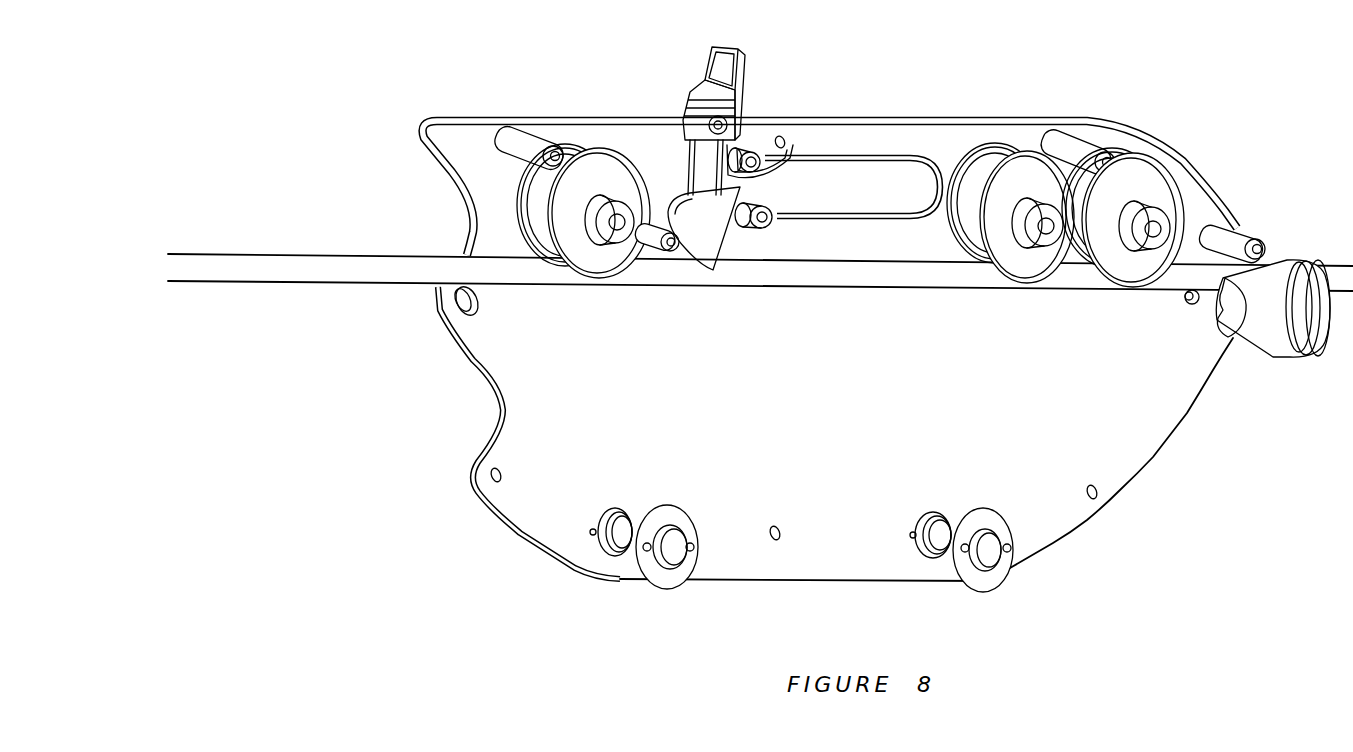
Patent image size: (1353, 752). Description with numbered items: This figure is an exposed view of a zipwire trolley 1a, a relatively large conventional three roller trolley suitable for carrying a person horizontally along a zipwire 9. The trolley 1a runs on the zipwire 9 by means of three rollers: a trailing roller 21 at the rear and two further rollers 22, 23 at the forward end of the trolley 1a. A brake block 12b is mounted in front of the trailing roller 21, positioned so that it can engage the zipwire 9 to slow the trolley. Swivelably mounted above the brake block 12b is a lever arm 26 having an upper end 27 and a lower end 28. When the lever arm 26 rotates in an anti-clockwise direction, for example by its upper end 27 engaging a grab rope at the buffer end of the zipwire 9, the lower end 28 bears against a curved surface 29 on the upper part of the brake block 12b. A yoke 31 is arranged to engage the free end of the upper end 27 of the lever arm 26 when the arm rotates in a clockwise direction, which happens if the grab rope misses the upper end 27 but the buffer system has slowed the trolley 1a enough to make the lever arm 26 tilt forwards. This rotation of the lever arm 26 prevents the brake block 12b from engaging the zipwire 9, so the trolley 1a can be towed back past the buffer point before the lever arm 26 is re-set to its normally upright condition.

The zipwire trolley 1a is at (1036, 90).
The zipwire 9 is at (376, 283).
The brake block 12b is at (737, 192).
The trailing roller 21 is at (630, 268).
The roller 22 is at (1040, 285).
The roller 23 is at (1133, 283).
The lever arm 26 is at (740, 112).
The upper end 27 is at (745, 67).
The lower end 28 is at (690, 175).
The curved surface 29 is at (768, 220).
The yoke 31 is at (792, 156).